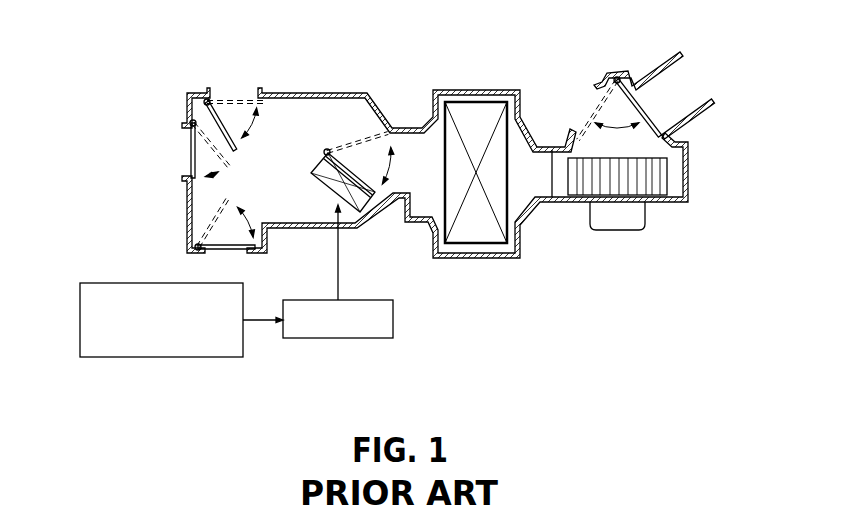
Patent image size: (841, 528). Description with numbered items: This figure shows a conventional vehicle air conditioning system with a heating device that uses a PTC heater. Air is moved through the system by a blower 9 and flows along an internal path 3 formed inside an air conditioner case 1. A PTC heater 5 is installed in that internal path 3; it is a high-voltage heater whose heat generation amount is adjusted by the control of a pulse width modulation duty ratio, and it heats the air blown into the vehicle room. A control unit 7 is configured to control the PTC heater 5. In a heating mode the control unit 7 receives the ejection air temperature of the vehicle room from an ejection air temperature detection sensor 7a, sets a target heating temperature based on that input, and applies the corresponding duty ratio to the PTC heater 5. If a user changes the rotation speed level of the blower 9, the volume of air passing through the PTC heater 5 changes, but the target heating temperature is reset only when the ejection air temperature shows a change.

The air conditioner case 1 is at (317, 92).
The internal path 3 is at (280, 178).
The PTC heater 5 is at (315, 157).
The control unit 7 is at (393, 318).
The ejection air temperature detection sensor 7a is at (162, 357).
The blower 9 is at (648, 188).